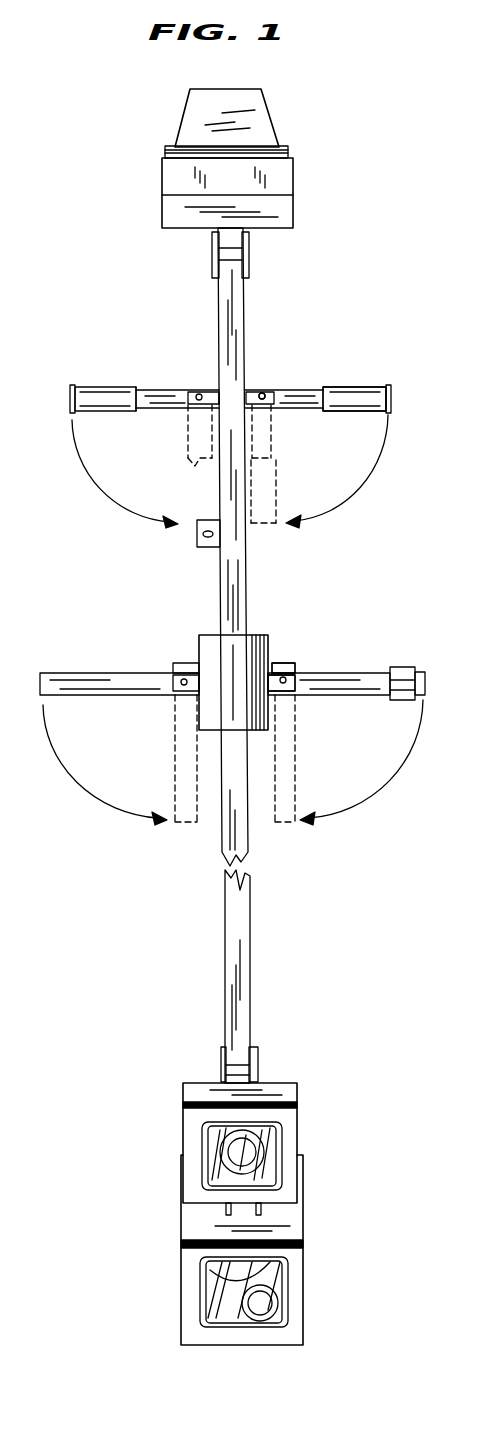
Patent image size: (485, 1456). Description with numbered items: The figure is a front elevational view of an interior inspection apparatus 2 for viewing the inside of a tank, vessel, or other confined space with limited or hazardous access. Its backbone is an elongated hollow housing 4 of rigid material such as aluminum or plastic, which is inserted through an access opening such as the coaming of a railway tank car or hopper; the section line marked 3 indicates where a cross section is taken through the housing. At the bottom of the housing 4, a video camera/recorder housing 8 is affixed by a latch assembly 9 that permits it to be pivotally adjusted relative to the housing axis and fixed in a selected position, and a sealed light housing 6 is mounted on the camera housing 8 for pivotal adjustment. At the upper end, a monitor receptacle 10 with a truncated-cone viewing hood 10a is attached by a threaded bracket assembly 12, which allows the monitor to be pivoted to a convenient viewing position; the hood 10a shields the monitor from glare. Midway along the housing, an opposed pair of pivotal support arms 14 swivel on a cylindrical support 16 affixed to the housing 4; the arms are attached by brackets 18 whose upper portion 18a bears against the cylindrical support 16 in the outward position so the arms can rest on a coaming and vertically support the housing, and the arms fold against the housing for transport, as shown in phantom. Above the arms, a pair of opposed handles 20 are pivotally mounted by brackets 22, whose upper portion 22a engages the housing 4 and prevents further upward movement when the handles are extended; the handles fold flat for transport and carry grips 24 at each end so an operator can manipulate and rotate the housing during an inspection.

The imaging apparatus 2 is at (258, 589).
The section line 3- 3 is at (255, 62).
The elongated hollow housing 4 is at (237, 930).
The sealed light housing 6 is at (300, 1122).
The video camera/recorder housing 8 is at (303, 1228).
The latch assembly 9 is at (258, 1057).
The monitor receptacle 10 is at (283, 172).
The viewing hood 10a is at (190, 112).
The threaded bracket assembly 12 is at (212, 244).
The pivotal support arms 14 is at (97, 673).
The cylindrical support 16 is at (207, 703).
The brackets 18 is at (278, 692).
The upper portion of brackets 18a is at (290, 663).
The handles 20 is at (163, 410).
The brackets 22 is at (258, 392).
The upper portion of brackets 22a is at (228, 382).
The grips 24 is at (340, 385).